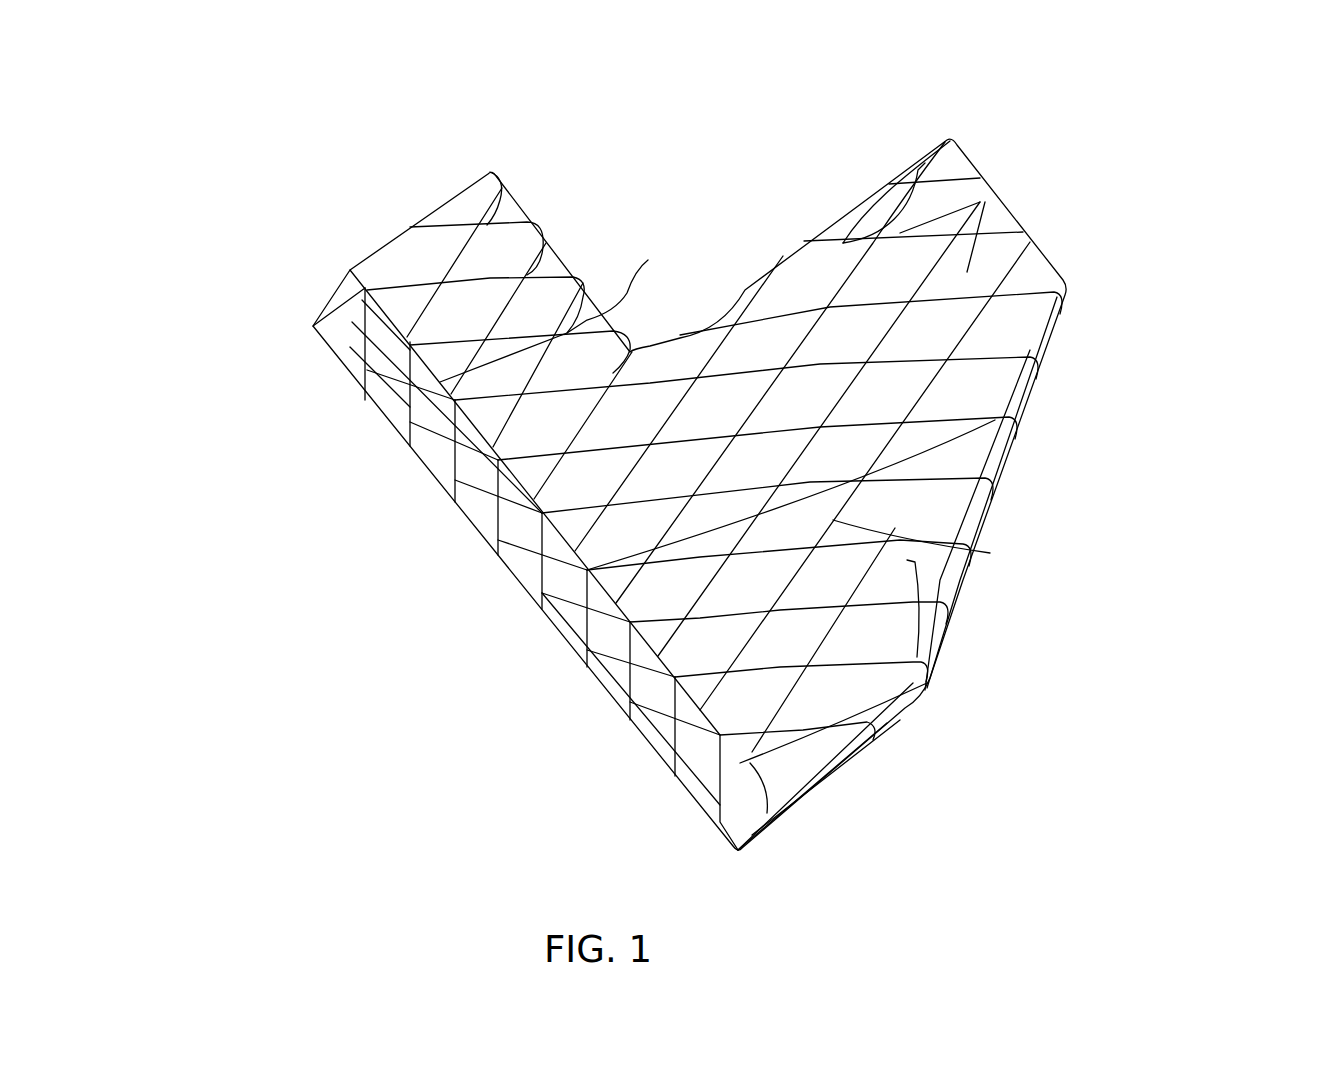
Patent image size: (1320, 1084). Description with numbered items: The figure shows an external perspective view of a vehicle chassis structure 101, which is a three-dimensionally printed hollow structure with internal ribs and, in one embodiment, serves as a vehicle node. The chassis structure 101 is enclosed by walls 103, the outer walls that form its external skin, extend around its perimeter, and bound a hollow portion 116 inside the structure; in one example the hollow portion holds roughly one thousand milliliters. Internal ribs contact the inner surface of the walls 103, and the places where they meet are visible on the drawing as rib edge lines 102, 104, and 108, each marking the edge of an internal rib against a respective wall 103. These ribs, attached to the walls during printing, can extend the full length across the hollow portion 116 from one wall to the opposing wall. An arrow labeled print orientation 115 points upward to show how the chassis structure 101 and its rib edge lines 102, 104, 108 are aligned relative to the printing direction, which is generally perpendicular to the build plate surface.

The chassis structure 101 is at (384, 156).
The rib edge line 102 is at (658, 656).
The wall 103 is at (967, 270).
The rib edge line 104 is at (833, 520).
The rib edge line 108 is at (887, 820).
The print orientation 115 is at (228, 560).
The hollow portion 116 is at (945, 316).